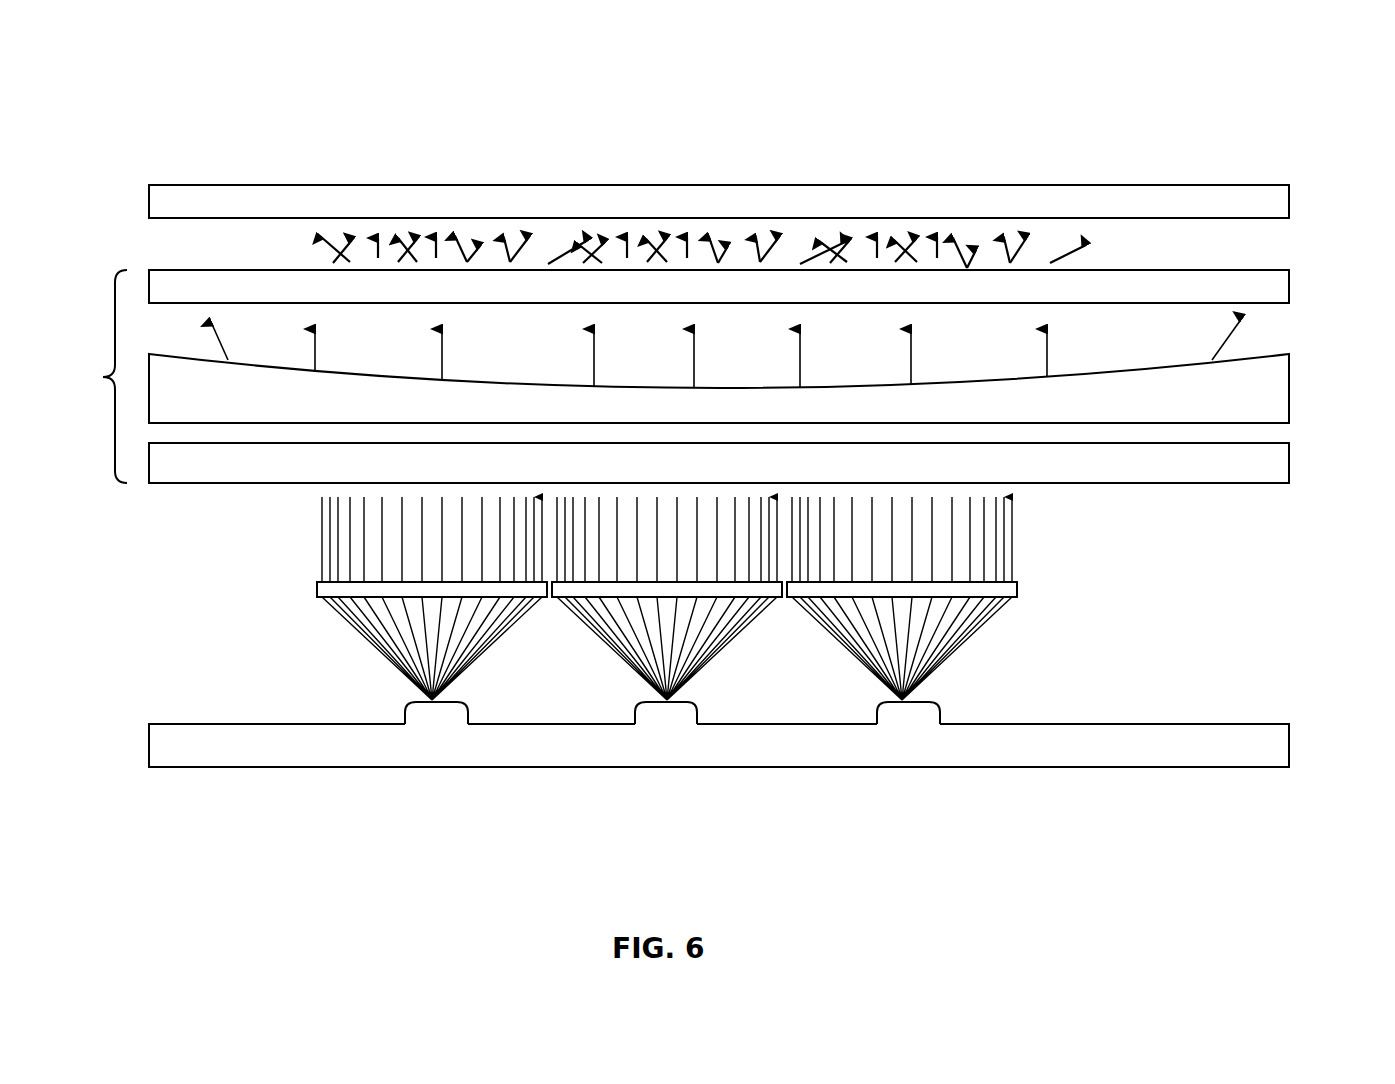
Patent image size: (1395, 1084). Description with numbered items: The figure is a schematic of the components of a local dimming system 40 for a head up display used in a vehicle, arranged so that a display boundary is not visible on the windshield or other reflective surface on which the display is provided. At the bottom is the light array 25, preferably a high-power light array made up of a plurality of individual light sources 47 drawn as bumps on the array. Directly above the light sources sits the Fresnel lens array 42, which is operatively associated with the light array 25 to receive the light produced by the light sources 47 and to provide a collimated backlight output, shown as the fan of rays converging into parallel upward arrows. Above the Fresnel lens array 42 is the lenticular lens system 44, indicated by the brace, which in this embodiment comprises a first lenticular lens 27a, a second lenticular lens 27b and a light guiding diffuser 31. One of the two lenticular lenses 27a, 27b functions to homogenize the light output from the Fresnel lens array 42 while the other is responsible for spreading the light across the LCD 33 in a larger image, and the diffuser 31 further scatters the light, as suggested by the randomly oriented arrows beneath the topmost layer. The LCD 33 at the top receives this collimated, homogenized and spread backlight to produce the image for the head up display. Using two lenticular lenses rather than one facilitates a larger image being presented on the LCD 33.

The local dimming system 40 is at (136, 88).
The LCD 33 is at (1284, 200).
The diffuser 31 is at (1284, 285).
The lenticular lens system 44 is at (94, 376).
The first lenticular lens 27a is at (1285, 388).
The second lenticular lens 27b is at (1295, 463).
The Fresnel lens array 42 is at (1018, 588).
The individual light sources 47 is at (908, 722).
The light array 25 is at (1284, 748).